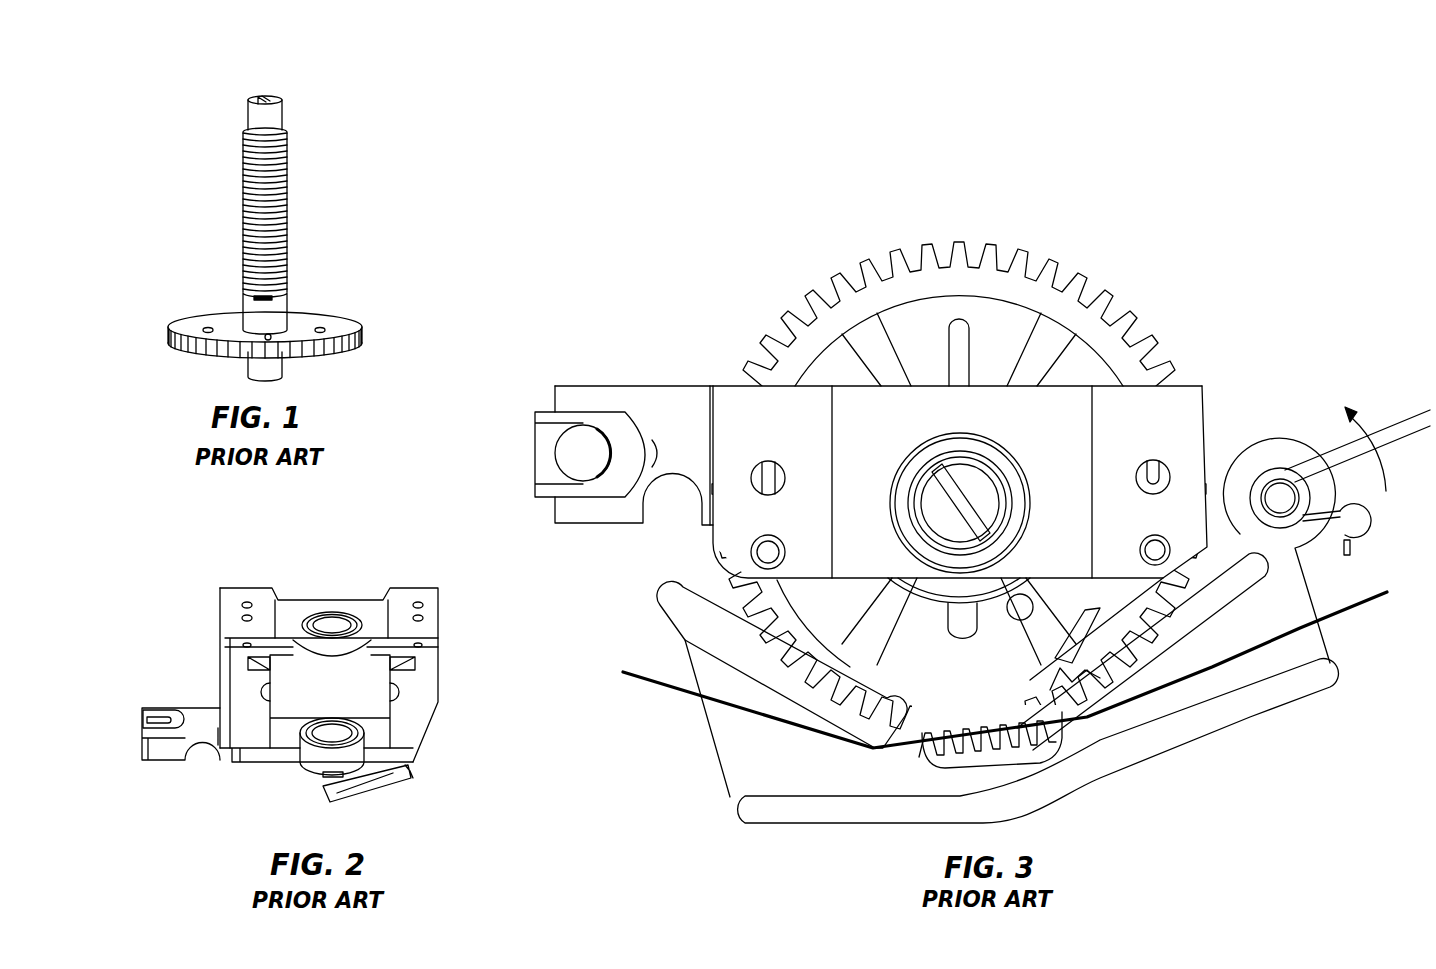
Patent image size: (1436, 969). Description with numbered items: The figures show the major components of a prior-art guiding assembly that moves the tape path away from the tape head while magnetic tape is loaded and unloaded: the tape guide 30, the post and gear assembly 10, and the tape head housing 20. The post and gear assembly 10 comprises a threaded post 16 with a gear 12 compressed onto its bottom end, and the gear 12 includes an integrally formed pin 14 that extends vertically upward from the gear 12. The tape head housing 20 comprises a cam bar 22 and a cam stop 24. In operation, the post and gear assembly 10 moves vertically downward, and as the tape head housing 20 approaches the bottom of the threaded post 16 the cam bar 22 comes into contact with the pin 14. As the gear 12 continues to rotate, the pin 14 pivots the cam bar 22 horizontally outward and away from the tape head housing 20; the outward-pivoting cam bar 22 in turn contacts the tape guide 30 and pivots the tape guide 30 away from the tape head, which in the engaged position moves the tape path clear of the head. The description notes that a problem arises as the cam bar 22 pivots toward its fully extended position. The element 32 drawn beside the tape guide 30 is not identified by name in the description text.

In FIG. 1, the worm gear assembly 10 is at (318, 105).
In FIG. 1, the gear 12 is at (335, 322).
In FIG. 1, the shaft pin 14 is at (250, 338).
In FIG. 3, the shaft pin 14 is at (1013, 614).
In FIG. 1, the threaded worm shaft 16 is at (288, 185).
In FIG. 2, the housing 20 is at (200, 594).
In FIG. 3, the housing 20 is at (917, 421).
In FIG. 2, the key lever 22 is at (372, 787).
In FIG. 3, the key lever 22 is at (1083, 605).
In FIG. 2, the tab 24 is at (320, 773).
In FIG. 3, the frame bar 30 is at (1250, 717).
In FIG. 3, the wire rod 32 is at (667, 688).